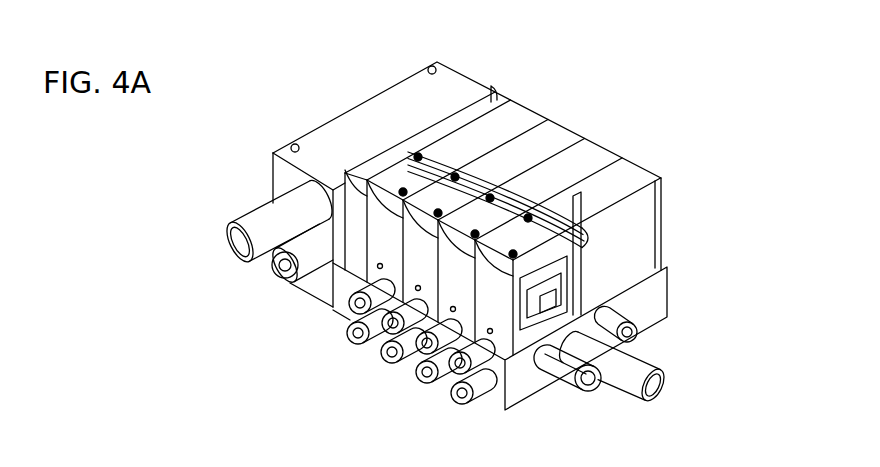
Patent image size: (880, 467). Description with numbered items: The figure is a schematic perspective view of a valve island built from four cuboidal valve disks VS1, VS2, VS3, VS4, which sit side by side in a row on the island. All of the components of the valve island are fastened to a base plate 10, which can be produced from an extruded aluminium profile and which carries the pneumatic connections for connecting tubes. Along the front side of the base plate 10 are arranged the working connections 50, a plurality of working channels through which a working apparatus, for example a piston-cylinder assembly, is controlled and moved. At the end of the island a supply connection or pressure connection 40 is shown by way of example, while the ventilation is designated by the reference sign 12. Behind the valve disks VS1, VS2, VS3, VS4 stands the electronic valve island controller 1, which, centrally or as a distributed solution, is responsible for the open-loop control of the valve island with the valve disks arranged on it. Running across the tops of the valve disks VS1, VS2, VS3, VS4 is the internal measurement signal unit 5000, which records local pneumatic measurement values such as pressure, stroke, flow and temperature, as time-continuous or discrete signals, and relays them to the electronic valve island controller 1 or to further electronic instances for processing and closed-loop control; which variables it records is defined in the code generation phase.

The electronic valve island controller 1 is at (370, 118).
The base plate 10 is at (657, 303).
The ventilation 12 is at (232, 240).
The supply connection 40 is at (282, 278).
The working connections 50 is at (468, 412).
The internal measurement signal unit 5000 is at (491, 100).
The valve disk VS1 is at (522, 108).
The valve disk VS2 is at (555, 133).
The valve disk VS3 is at (598, 157).
The valve disk VS4 is at (628, 173).